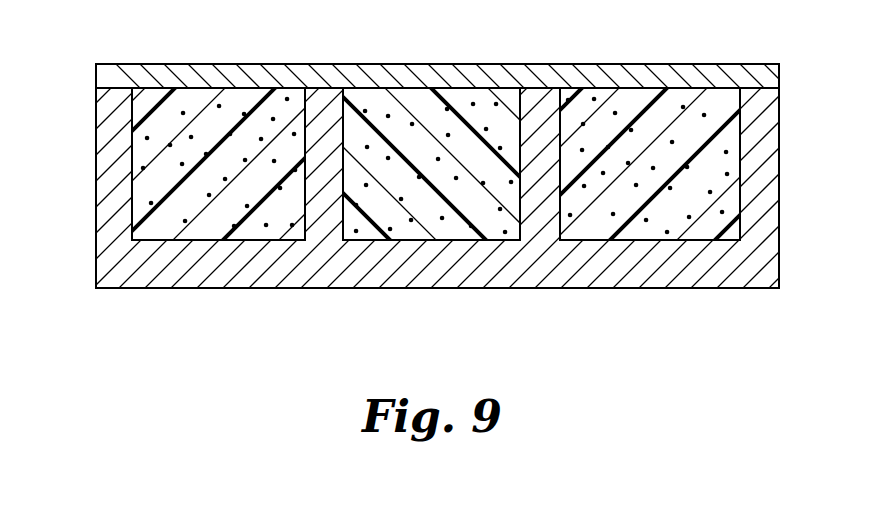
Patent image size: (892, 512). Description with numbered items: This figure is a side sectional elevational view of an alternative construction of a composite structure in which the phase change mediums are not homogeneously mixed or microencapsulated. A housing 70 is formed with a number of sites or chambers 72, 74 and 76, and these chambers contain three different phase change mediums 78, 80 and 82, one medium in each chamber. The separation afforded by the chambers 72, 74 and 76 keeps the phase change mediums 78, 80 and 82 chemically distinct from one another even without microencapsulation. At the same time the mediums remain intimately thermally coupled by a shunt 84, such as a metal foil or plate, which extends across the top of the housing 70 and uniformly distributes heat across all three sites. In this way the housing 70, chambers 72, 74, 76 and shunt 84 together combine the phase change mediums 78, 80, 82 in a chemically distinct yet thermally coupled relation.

The housing 70 is at (88, 193).
The shunt 84 is at (220, 64).
The chamber 72 is at (231, 240).
The chamber 74 is at (428, 240).
The chamber 76 is at (649, 240).
The phase change medium 78 is at (266, 108).
The phase change medium 80 is at (452, 110).
The phase change medium 82 is at (649, 110).